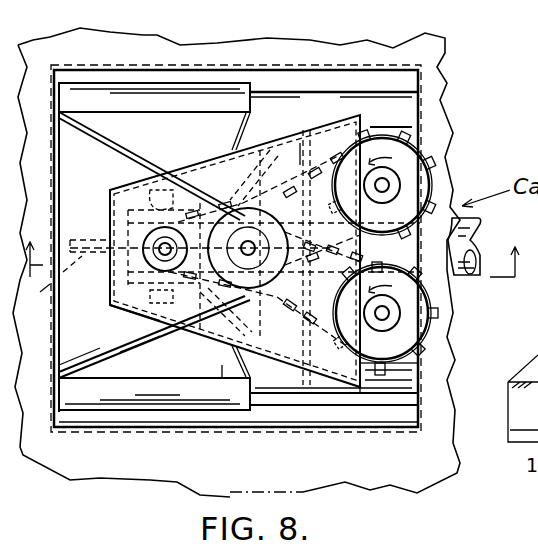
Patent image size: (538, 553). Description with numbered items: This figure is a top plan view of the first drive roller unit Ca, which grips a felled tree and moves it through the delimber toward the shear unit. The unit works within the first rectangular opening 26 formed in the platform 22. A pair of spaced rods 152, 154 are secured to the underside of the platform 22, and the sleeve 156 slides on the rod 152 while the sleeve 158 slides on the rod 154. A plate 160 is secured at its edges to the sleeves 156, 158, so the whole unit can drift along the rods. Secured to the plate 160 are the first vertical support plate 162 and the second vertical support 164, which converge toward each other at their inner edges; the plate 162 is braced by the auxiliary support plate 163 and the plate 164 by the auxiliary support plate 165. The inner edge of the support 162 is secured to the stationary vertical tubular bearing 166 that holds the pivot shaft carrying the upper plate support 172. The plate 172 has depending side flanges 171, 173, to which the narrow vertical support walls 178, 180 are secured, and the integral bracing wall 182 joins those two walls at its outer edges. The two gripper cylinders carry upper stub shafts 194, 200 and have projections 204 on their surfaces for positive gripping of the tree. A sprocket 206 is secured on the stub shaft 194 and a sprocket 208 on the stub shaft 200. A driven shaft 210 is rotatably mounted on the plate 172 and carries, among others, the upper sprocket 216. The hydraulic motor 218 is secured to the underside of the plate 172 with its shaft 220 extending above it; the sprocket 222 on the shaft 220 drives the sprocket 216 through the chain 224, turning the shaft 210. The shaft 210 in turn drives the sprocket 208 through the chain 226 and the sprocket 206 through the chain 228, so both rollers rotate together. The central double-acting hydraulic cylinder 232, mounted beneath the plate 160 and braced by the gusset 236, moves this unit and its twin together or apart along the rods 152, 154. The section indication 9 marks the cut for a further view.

The section line 9- 9 is at (271, 269).
The platform 22 is at (443, 452).
The first rectangular opening 26 is at (417, 86).
The rod 152 is at (405, 108).
The rod 154 is at (405, 385).
The sleeve 156 is at (163, 100).
The sleeve 158 is at (163, 405).
The plate 160 is at (70, 178).
The first vertical support plate 162 is at (90, 367).
The auxiliary support plate 163 is at (215, 365).
The second vertical support 164 is at (152, 166).
The auxiliary support plate 165 is at (232, 135).
The stationary vertical tubular bearing 166 is at (291, 199).
The depending side flange 171 is at (133, 183).
The upper plate support 172 is at (213, 332).
The depending side flange 173 is at (150, 325).
The narrow vertical support wall 178 is at (352, 112).
The narrow vertical support wall 180 is at (327, 377).
The integral bracing wall 182 is at (318, 140).
The stub shaft 194 is at (384, 313).
The stub shaft 200 is at (384, 185).
The projections 204 is at (435, 316).
The sprocket 206 is at (425, 334).
The sprocket 208 is at (418, 183).
The driven shaft 210 is at (245, 252).
The upper sprocket 216 is at (230, 352).
The hydraulic motor 218 is at (112, 304).
The shaft 220 is at (160, 255).
The sprocket 222 is at (152, 230).
The chain 224 is at (186, 212).
The chain 226 is at (283, 305).
The chain 228 is at (300, 143).
The central double-acting hydraulic cylinder 232 is at (483, 235).
The gusset 236 is at (27, 295).